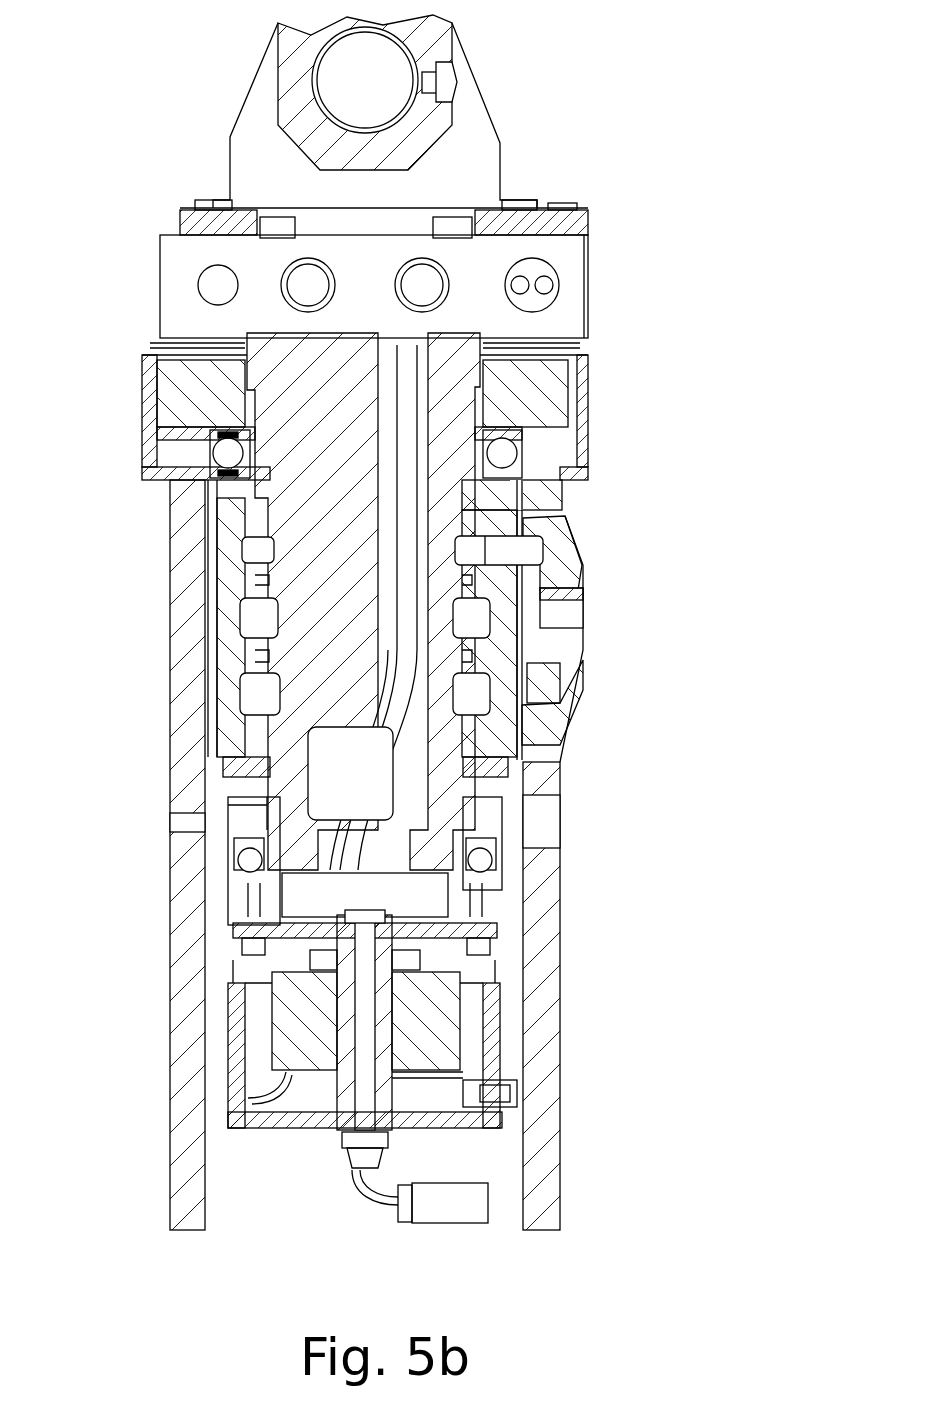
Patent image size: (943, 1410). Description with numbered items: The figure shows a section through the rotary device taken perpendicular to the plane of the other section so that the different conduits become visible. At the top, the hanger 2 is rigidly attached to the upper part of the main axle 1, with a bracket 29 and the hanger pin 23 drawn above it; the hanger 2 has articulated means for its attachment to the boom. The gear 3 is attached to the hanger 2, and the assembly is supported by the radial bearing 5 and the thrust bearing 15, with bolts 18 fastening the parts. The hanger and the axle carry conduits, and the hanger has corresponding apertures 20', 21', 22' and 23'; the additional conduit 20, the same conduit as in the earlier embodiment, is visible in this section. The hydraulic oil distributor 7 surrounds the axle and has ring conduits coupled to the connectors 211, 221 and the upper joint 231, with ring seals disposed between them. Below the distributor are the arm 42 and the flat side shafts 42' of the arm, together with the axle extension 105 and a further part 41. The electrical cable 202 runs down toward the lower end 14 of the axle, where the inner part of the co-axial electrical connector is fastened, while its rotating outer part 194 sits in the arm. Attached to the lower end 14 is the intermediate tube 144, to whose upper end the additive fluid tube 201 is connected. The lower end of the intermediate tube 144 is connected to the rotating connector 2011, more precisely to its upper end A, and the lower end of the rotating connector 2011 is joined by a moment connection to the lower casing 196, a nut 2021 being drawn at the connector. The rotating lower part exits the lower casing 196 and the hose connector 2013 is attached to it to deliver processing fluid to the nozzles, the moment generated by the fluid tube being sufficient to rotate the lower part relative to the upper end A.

The main axle 1 is at (322, 433).
The hanger 2 is at (178, 262).
The gear 3 is at (531, 415).
The radial bearing 5 is at (207, 462).
The distributor 7 is at (232, 655).
The lower end 14 is at (417, 933).
The thrust bearing 15 is at (232, 878).
The bolts 18 is at (440, 932).
The additional conduit 20 is at (358, 429).
The aperture 20' is at (595, 233).
The aperture 21' is at (510, 219).
The aperture 22' is at (220, 235).
The hanger pin 23 is at (365, 80).
The aperture 23' is at (149, 317).
The bracket 29 is at (462, 160).
The wall joint 41 is at (205, 812).
The arm 42 is at (672, 996).
The side shaft of arm 42' is at (382, 855).
The axle extension 105 is at (232, 840).
The intermediate tube 144 is at (350, 1005).
The rotating outer part 194 is at (430, 1073).
The lower casing 196 is at (237, 1060).
The additive fluid tube 201 is at (522, 280).
The electrical cable 202 is at (550, 296).
The connector 211 is at (567, 617).
The connector 221 is at (548, 720).
The upper joint 231 is at (292, 72).
The rotating connector 2011 is at (316, 1148).
The hose connector 2013 is at (348, 1170).
The nut 2021 is at (280, 1093).
The inner part A is at (333, 1083).